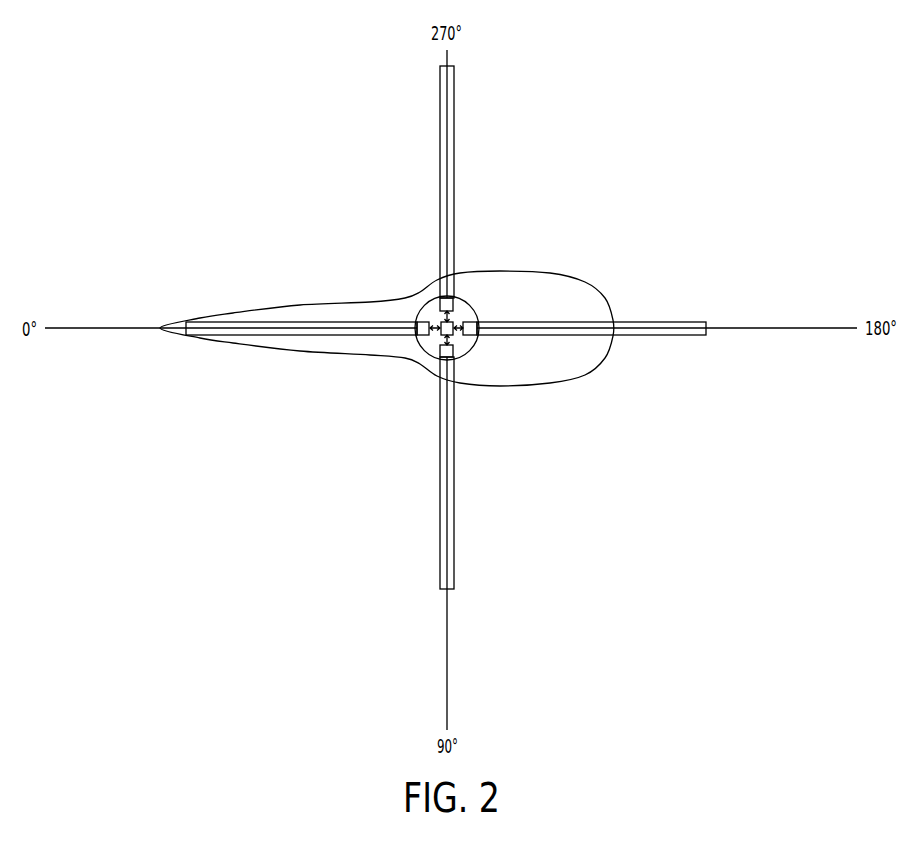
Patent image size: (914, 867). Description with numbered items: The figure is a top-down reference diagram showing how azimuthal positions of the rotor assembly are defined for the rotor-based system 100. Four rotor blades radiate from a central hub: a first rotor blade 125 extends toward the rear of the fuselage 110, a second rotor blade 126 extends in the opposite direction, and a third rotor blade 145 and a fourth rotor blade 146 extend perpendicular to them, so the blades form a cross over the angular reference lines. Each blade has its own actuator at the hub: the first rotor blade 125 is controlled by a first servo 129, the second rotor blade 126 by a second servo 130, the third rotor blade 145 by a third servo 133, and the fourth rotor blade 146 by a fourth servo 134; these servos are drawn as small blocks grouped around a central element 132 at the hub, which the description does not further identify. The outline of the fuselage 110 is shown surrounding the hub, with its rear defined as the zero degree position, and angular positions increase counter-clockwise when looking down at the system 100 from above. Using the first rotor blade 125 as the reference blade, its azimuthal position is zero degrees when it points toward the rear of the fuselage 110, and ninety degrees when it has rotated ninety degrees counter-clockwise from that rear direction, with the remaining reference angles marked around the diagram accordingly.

The system 100 is at (862, 88).
The fuselage 110 is at (607, 286).
The first rotor blade 125 is at (222, 337).
The second rotor blade 126 is at (682, 336).
The first servo 129 is at (420, 352).
The second servo 130 is at (475, 337).
The central feed element 132 is at (435, 322).
The third servo 133 is at (453, 355).
The fourth servo 134 is at (450, 304).
The third rotor blade 145 is at (438, 485).
The fourth rotor blade 146 is at (455, 158).